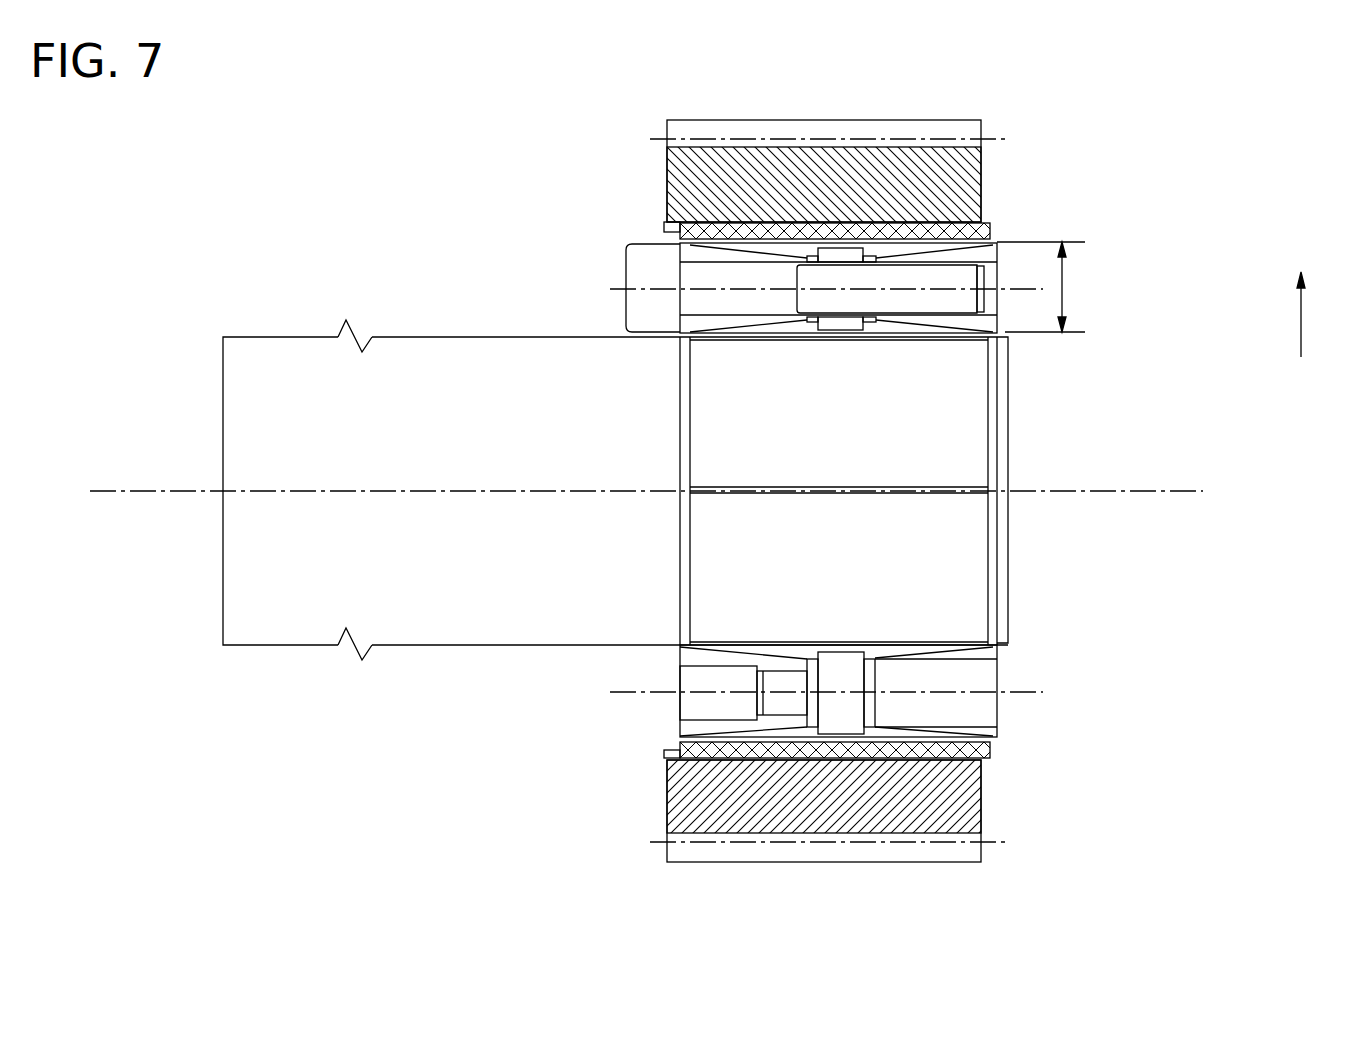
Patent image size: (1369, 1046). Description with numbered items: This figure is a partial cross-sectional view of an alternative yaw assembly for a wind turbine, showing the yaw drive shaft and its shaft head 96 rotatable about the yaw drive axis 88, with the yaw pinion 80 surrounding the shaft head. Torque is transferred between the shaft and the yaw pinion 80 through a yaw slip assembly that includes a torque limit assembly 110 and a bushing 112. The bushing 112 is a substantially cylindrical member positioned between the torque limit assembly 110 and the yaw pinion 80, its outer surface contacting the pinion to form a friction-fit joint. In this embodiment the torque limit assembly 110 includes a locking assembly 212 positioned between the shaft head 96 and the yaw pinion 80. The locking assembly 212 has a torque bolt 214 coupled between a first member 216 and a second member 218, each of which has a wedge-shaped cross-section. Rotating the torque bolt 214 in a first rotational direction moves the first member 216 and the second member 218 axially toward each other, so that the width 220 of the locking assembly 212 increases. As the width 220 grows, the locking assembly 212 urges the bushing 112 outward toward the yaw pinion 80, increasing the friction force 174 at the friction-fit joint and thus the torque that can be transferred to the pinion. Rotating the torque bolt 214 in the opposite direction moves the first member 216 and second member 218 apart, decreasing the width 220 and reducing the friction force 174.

The yaw pinion 80 is at (1010, 153).
The yaw drive axis 88 is at (1195, 490).
The shaft head 96 is at (970, 422).
The torque limit assembly 110 is at (1124, 250).
The bushing 112 is at (985, 232).
The friction force 174 is at (1301, 322).
The locking assembly 212 is at (1090, 320).
The torque bolt 214 is at (638, 267).
The first member 216 is at (707, 255).
The second member 218 is at (945, 252).
The width 220 is at (1063, 283).